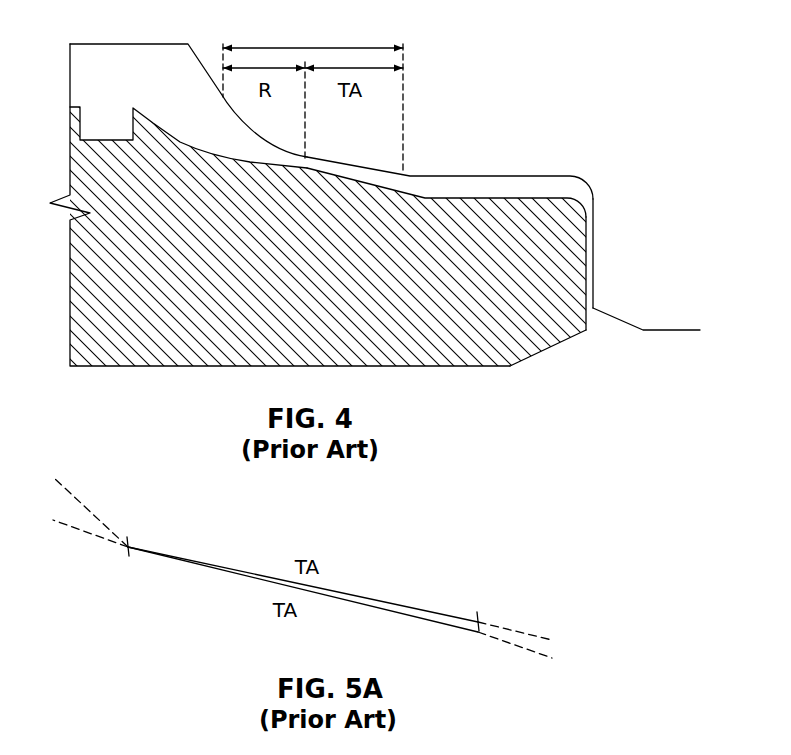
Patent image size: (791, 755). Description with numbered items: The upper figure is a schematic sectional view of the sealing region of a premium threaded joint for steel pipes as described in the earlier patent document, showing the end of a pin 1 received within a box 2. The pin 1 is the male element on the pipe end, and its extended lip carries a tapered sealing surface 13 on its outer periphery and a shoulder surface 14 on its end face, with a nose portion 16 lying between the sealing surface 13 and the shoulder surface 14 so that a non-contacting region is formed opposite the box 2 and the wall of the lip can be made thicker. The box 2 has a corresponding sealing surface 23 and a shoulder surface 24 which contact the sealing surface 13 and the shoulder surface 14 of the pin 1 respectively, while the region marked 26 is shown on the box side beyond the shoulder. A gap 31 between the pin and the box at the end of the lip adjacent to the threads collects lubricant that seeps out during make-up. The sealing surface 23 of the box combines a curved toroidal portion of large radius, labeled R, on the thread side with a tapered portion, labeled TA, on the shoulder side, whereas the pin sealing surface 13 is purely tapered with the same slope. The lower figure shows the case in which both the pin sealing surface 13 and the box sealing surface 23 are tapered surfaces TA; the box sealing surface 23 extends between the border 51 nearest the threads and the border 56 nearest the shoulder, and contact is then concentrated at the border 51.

In FIG. 4, the pin 1 is at (218, 357).
In FIG. 4, the box 2 is at (557, 132).
In FIG. 4, the sealing surface 13 is at (345, 188).
In FIG. 5A, the sealing surface 13 is at (228, 573).
In FIG. 4, the shoulder surface 14 is at (582, 276).
In FIG. 4, the nose portion 16 is at (549, 348).
In FIG. 4, the sealing surface 23 is at (316, 157).
In FIG. 5A, the sealing surface 23 is at (352, 593).
In FIG. 4, the shoulder surface 24 is at (596, 243).
In FIG. 4, the lower extension surface 26 is at (615, 318).
In FIG. 4, the gap 31 is at (120, 63).
In FIG. 5A, the border 51 is at (128, 550).
In FIG. 5A, the border 56 is at (487, 633).